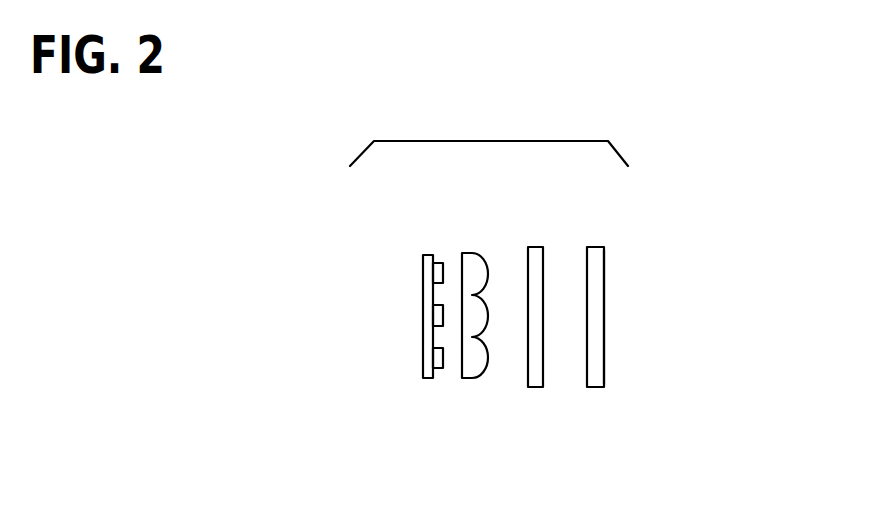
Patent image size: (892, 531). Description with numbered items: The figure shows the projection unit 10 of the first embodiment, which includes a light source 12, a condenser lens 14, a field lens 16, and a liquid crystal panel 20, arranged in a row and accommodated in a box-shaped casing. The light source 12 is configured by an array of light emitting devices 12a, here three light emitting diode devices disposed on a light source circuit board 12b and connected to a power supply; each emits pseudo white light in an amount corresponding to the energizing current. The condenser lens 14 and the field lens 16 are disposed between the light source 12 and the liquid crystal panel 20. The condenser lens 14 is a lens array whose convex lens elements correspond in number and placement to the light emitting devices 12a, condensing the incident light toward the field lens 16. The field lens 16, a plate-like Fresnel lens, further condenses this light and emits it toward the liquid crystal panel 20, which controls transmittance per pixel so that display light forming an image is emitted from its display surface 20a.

The projection unit 10 is at (380, 340).
The light source 12 is at (380, 307).
The light emitting device 12a is at (436, 280).
The light source circuit board 12b is at (423, 266).
The condenser lens 14 is at (462, 260).
The field lens 16 is at (543, 370).
The liquid crystal panel 20 is at (604, 370).
The display surface 20a is at (607, 283).